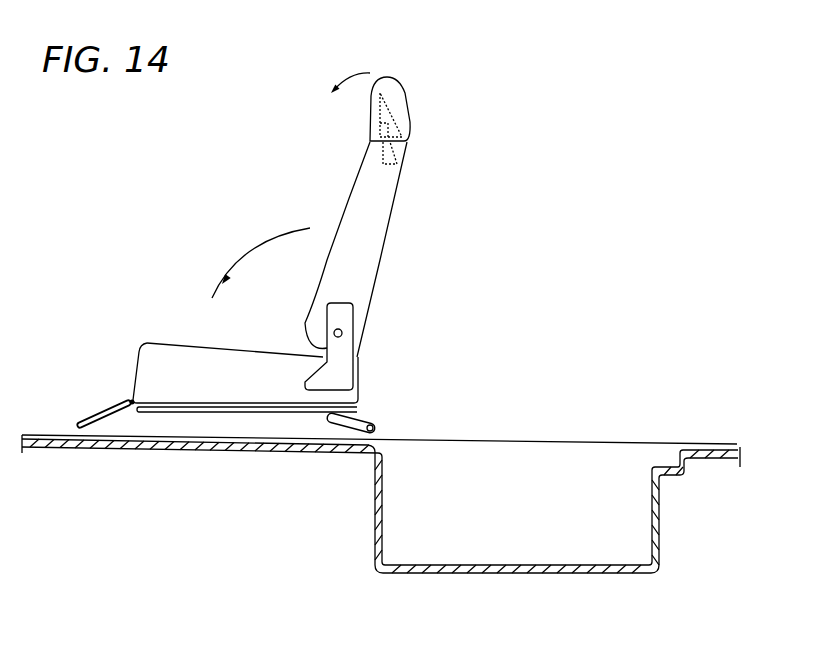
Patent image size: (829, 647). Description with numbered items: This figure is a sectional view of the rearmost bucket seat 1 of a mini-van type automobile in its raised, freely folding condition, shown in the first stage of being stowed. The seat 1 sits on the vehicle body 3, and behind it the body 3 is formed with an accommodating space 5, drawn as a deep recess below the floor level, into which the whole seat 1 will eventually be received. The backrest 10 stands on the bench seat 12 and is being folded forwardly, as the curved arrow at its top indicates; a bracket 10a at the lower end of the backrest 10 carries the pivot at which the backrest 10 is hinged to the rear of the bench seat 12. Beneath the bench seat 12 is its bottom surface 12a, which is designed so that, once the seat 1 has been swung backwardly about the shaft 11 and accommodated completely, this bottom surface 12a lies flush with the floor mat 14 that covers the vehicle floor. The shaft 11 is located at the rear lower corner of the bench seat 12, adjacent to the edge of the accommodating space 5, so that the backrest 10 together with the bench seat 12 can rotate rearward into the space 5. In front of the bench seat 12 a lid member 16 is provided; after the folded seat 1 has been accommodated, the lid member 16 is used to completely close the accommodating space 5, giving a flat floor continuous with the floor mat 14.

The rearmost seat 1 is at (445, 159).
The vehicle body 3 is at (313, 450).
The accommodating space 5 is at (532, 527).
The backrest 10 is at (382, 232).
The seat back bracket 10a is at (378, 287).
The shaft 11 is at (374, 422).
The bench seat 12 is at (232, 352).
The bottom surface 12a is at (227, 412).
The floor mat 14 is at (653, 442).
The lid member 16 is at (110, 417).